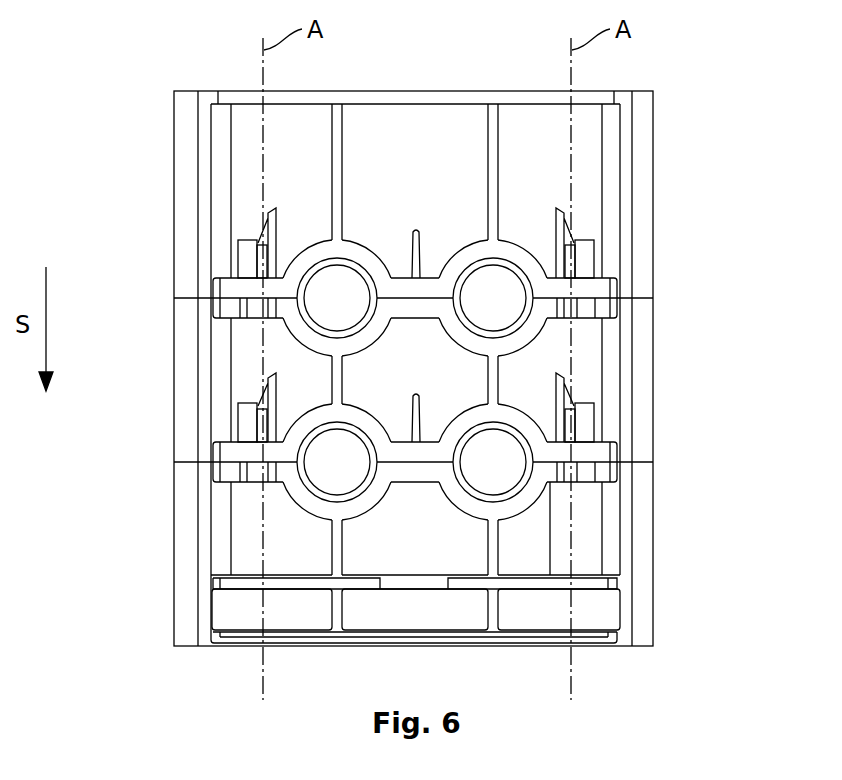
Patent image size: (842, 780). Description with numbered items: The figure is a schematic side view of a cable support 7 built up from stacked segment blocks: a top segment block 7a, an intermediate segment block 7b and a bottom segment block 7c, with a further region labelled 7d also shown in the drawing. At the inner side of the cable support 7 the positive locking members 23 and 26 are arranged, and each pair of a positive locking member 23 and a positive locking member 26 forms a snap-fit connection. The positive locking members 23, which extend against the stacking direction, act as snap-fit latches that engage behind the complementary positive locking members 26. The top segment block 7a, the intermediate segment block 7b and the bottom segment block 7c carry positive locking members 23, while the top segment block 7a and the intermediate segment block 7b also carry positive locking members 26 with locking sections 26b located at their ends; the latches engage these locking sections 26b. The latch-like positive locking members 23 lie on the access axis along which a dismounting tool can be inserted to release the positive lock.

The cable support 7 is at (688, 157).
The top segment block 7a is at (655, 130).
The intermediate segment block 7b is at (655, 370).
The bottom segment block 7c is at (655, 527).
The circular opening 7d is at (327, 300).
The positive locking member 23 is at (266, 217).
The positive locking member 26 is at (246, 252).
The locking section 26b is at (263, 262).